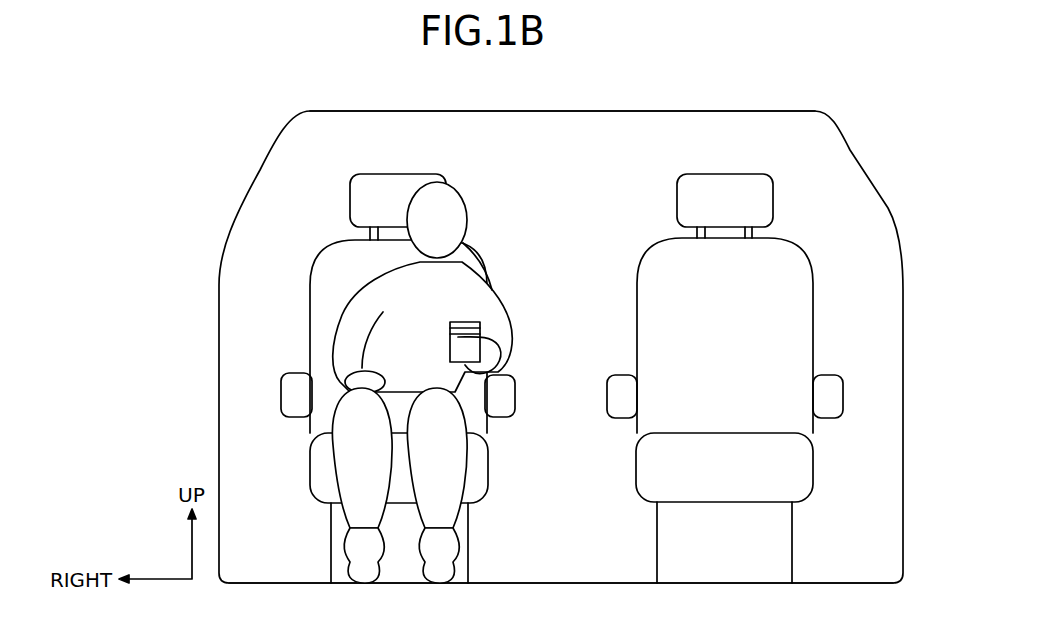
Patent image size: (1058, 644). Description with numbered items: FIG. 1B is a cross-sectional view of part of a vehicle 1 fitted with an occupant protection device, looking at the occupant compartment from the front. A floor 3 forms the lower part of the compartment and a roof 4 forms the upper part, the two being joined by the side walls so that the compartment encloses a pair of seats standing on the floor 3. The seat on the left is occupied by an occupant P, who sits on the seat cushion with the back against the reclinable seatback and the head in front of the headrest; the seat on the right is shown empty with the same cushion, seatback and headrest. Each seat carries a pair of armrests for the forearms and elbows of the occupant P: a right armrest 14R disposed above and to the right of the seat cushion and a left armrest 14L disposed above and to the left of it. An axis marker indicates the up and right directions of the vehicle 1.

The vehicle 1 is at (704, 69).
The floor 3 is at (554, 582).
The roof 4 is at (565, 110).
The right armrest 14R is at (297, 372).
The left armrest 14L is at (521, 397).
The occupant P is at (470, 223).